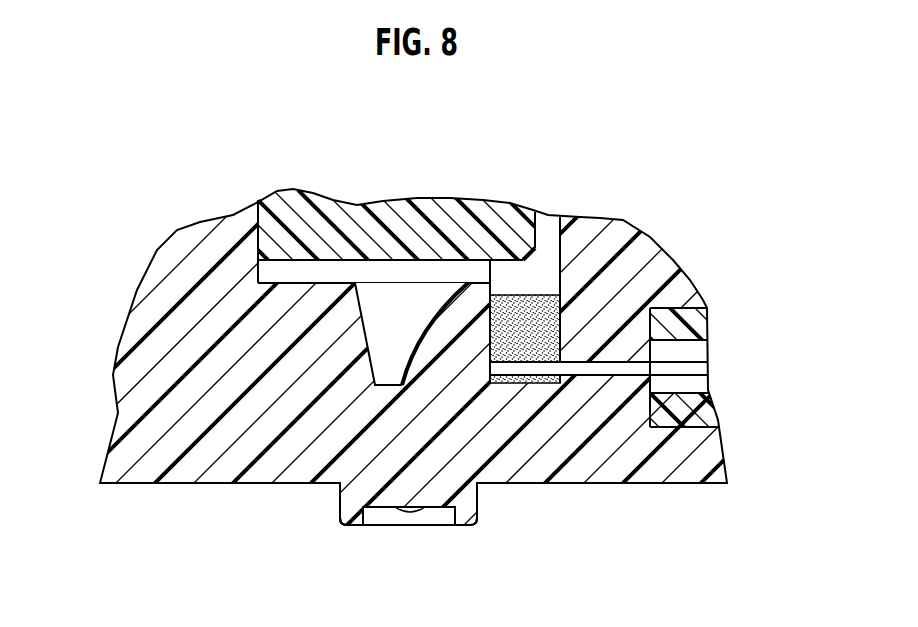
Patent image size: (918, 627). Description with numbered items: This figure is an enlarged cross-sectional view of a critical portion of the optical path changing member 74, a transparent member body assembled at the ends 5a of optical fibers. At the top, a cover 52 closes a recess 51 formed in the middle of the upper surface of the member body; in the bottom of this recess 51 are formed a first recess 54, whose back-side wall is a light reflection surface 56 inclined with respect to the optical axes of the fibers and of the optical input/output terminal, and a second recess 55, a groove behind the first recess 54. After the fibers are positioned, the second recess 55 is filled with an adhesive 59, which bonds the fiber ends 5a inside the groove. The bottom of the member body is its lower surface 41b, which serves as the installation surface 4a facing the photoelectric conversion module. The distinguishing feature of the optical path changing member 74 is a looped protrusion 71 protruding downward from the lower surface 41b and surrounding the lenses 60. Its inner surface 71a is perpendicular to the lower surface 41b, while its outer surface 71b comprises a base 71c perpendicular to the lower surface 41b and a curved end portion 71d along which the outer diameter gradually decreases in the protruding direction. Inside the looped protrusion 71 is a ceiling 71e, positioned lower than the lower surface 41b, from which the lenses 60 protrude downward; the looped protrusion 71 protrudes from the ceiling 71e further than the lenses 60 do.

The optical path changing member 74 is at (612, 142).
The recess 51 is at (290, 272).
The cover 52 is at (333, 226).
The first recess 54 is at (383, 302).
The light reflection surface 56 is at (432, 328).
The second recess 55 is at (513, 308).
The adhesive 59 is at (548, 378).
The ends of optical fibers 5a is at (546, 372).
The installation surface 4a is at (138, 487).
The lower surface 41b is at (645, 487).
The outer surface 71b is at (262, 510).
The base 71c is at (340, 503).
The end portion 71d is at (343, 528).
The inner surface 71a is at (368, 516).
The ceiling 71e is at (437, 512).
The looped protrusion 71 is at (358, 528).
The lenses 60 is at (410, 515).